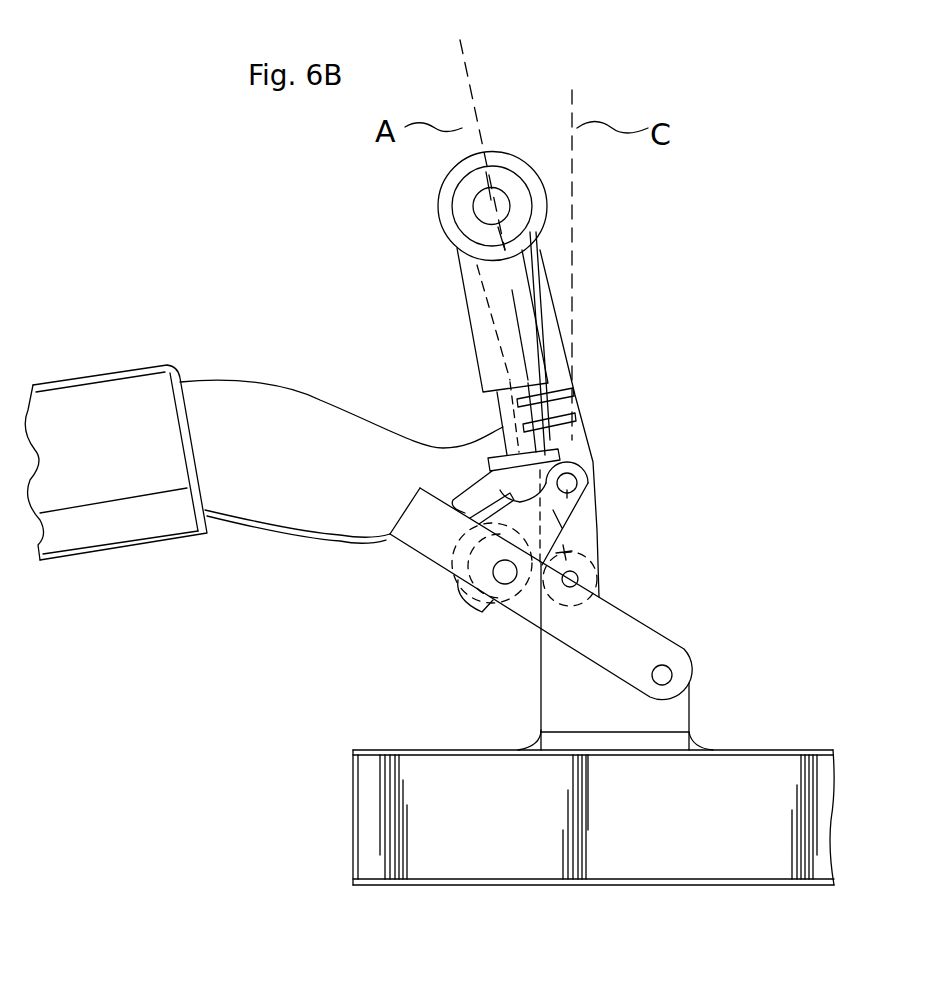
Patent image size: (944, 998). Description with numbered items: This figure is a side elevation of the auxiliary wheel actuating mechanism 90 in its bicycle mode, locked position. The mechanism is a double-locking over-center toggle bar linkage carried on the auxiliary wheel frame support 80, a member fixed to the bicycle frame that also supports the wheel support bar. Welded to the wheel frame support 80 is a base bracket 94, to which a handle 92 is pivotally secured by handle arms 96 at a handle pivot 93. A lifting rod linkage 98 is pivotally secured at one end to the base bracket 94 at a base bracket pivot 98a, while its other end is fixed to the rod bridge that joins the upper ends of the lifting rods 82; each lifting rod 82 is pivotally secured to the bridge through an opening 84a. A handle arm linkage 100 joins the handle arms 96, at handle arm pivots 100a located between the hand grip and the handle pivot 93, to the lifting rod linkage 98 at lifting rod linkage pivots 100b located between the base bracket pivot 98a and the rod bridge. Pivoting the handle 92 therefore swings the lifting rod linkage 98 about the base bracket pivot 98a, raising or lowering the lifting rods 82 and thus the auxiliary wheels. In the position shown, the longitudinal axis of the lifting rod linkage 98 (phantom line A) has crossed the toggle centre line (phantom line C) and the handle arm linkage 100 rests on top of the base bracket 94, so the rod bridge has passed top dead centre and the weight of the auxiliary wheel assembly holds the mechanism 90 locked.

The auxiliary wheel frame support 80 is at (717, 837).
The lifting rod 82 is at (482, 379).
The opening 84a is at (466, 212).
The auxiliary wheel actuating mechanism 90 is at (600, 291).
The handle 92 is at (230, 500).
The handle pivot 93 is at (664, 675).
The base bracket 94 is at (598, 704).
The handle arm 96 is at (613, 627).
The lifting rod linkage 98 is at (557, 370).
The base bracket pivot 98a is at (578, 579).
The handle arm linkage 100 is at (568, 514).
The handle arm pivot 100a is at (505, 575).
The lifting rod linkage pivot 100b is at (577, 483).